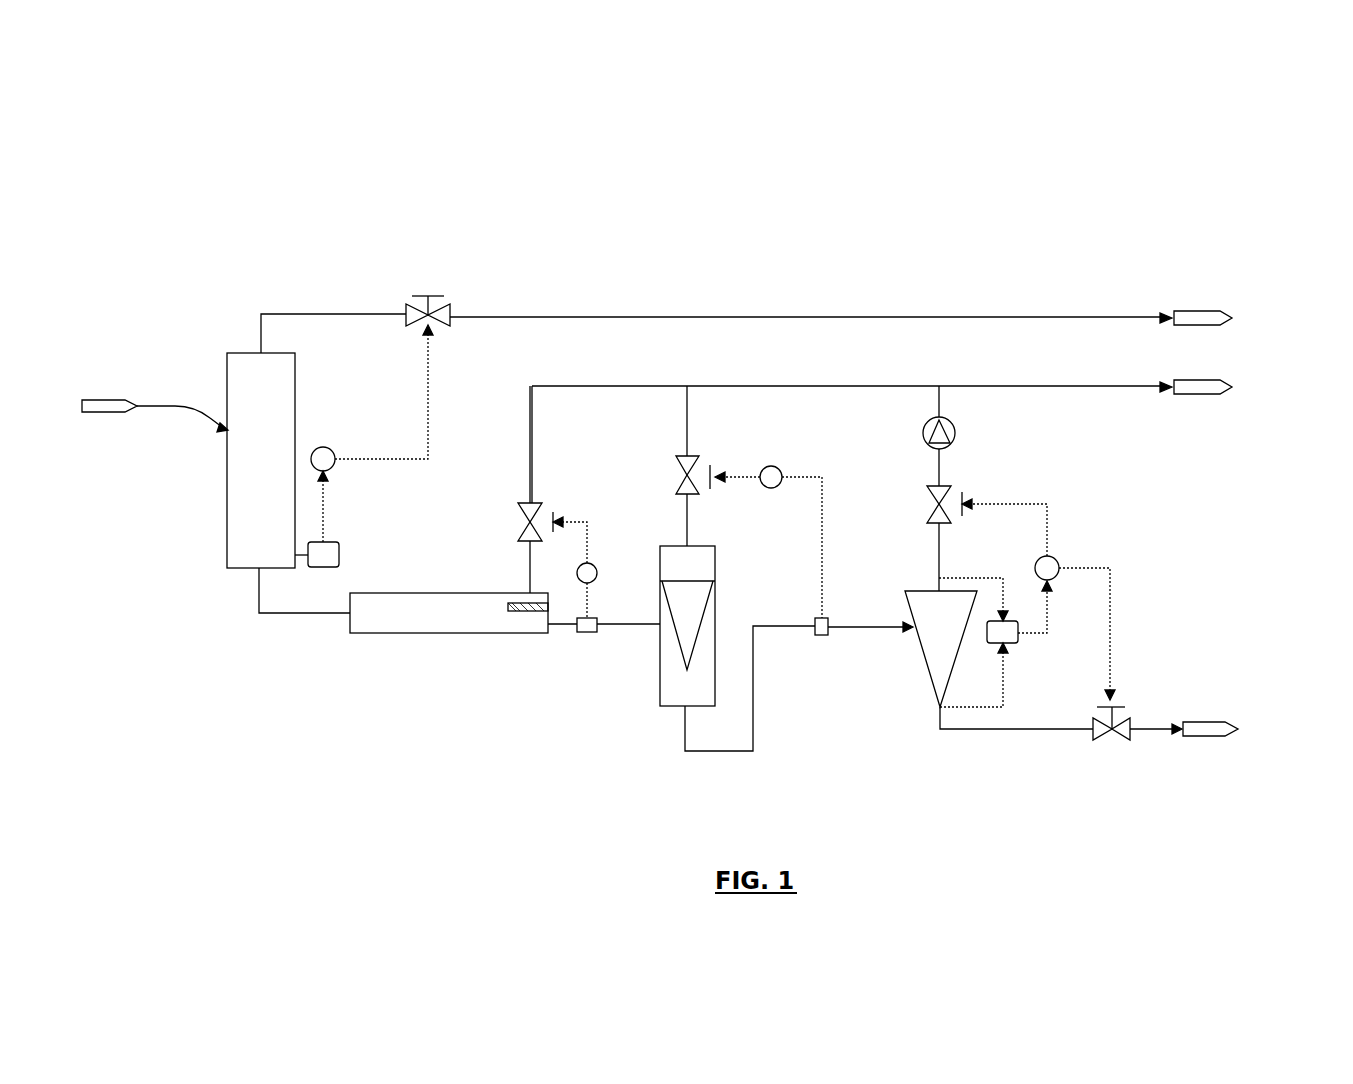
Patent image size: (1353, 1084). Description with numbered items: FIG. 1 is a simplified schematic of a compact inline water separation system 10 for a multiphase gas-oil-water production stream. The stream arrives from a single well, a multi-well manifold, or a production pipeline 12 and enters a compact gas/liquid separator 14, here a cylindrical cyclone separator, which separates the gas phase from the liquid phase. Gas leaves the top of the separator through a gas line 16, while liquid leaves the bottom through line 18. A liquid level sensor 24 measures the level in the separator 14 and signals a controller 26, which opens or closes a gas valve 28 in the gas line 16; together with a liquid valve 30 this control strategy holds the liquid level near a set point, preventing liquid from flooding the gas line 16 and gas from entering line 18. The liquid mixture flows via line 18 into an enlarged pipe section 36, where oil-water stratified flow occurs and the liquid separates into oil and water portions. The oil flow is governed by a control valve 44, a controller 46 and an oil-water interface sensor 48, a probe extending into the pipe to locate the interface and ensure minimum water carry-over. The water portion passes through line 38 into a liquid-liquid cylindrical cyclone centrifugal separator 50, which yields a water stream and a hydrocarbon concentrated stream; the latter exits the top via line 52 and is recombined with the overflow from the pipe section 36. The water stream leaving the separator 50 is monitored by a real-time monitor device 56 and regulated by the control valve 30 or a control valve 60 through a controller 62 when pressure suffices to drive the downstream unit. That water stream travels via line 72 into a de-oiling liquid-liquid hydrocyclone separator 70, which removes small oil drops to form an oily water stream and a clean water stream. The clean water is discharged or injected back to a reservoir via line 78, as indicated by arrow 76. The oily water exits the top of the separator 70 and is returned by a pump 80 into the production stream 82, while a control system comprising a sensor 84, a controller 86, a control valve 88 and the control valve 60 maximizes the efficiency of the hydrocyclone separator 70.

The compact inline water separation system 10 is at (916, 249).
The production pipeline 12 is at (105, 400).
The gas/liquid separator 14 is at (227, 388).
The gas line 16 is at (308, 314).
The liquid line 18 is at (270, 620).
The liquid level sensor 24 is at (339, 548).
The controller 26 is at (330, 448).
The gas valve 28 is at (445, 300).
The liquid valve 30 is at (700, 462).
The enlarged pipe section 36 is at (430, 633).
The water line 38 is at (610, 630).
The control valve 44 is at (518, 505).
The controller 46 is at (594, 565).
The oil-water interface sensor 48 is at (610, 624).
The liquid-liquid cylindrical cyclone centrifugal separator 50 is at (660, 680).
The hydrocarbon line 52 is at (690, 512).
The real-time monitor device 56 is at (825, 618).
The control valve 60 is at (1130, 712).
The controller 62 is at (775, 466).
The de-oiling liquid-liquid hydrocyclone separator 70 is at (920, 655).
The water line 72 is at (753, 655).
The discharge arrow 76 is at (1232, 726).
The clean water line 78 is at (985, 729).
The pump 80 is at (958, 428).
The production stream 82 is at (1222, 311).
The sensor 84 is at (1015, 642).
The controller 86 is at (1058, 558).
The control valve 88 is at (958, 486).